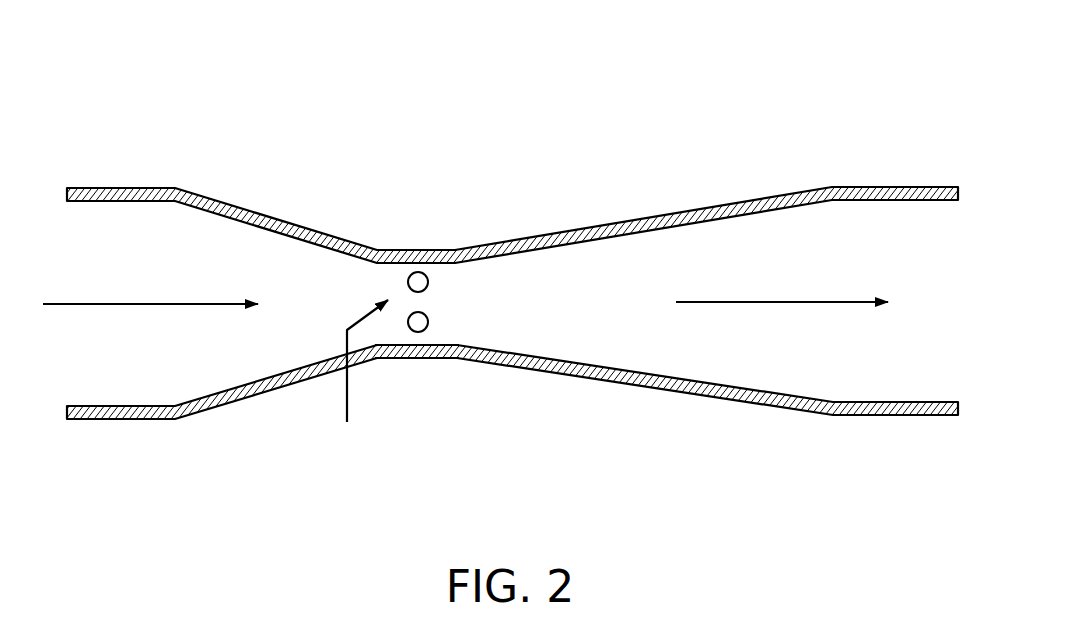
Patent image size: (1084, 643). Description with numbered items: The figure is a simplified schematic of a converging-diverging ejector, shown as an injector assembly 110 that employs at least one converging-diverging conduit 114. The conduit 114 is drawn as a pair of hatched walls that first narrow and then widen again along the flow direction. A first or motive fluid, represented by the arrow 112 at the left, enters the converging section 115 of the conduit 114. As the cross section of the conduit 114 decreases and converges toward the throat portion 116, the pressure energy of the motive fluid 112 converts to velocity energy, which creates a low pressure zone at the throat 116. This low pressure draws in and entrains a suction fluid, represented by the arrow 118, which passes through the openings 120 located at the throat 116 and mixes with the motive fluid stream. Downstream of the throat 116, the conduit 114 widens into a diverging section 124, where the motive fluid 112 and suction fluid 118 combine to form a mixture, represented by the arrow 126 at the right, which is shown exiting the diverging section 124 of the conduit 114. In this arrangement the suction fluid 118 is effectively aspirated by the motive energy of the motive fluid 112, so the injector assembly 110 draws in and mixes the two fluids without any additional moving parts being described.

The injector assembly 110 is at (692, 137).
The motive fluid 112 is at (88, 303).
The converging-diverging conduit 114 is at (215, 200).
The converging section 115 is at (262, 393).
The throat portion 116 is at (425, 358).
The suction fluid 118 is at (348, 398).
The openings 120 is at (420, 280).
The diverging section 124 is at (658, 388).
The mixture 126 is at (816, 300).